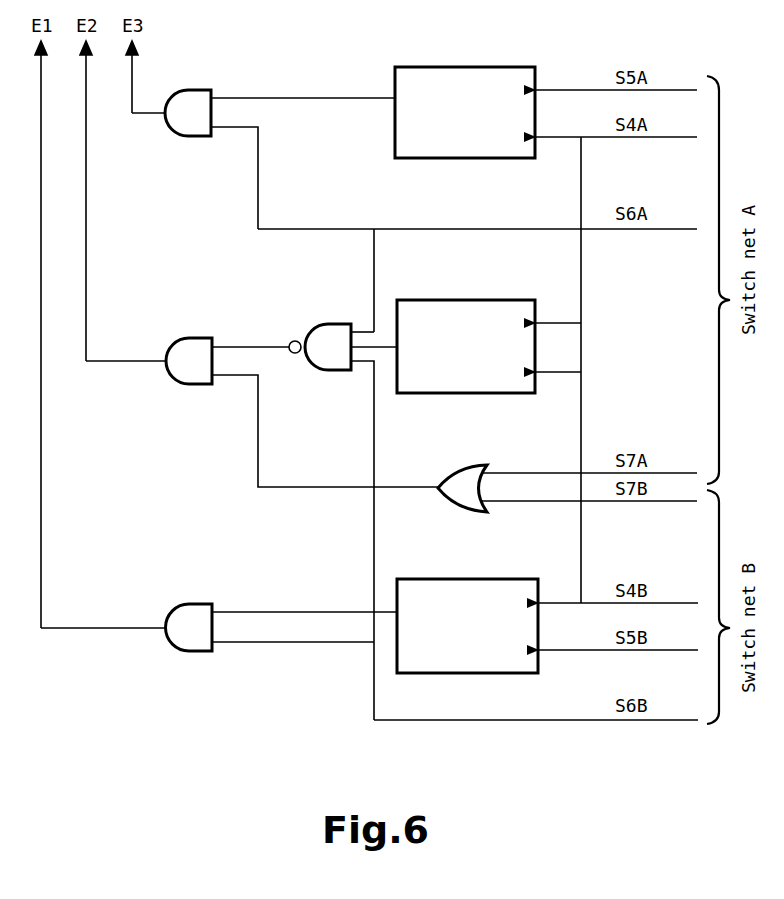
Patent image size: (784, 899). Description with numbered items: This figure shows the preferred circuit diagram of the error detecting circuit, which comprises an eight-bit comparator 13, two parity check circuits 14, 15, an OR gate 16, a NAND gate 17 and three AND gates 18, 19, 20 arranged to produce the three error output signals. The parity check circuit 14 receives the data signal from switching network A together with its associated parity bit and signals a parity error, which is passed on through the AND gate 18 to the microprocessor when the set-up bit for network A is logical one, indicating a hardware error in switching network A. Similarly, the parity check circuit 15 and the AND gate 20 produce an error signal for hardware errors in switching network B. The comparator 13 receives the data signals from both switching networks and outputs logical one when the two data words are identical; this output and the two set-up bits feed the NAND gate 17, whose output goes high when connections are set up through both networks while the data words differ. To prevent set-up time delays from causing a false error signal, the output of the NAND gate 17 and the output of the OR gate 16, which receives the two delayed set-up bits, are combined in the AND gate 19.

The 8-bit-comparator 13 is at (458, 300).
The parity check circuit 14 is at (460, 67).
The parity check circuit 15 is at (458, 579).
The OR gate 16 is at (462, 468).
The NAND gate 17 is at (317, 324).
The AND gate 18 is at (196, 90).
The AND gate 19 is at (185, 338).
The AND gate 20 is at (187, 604).